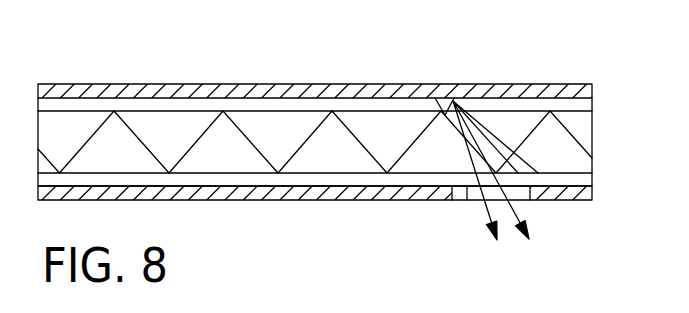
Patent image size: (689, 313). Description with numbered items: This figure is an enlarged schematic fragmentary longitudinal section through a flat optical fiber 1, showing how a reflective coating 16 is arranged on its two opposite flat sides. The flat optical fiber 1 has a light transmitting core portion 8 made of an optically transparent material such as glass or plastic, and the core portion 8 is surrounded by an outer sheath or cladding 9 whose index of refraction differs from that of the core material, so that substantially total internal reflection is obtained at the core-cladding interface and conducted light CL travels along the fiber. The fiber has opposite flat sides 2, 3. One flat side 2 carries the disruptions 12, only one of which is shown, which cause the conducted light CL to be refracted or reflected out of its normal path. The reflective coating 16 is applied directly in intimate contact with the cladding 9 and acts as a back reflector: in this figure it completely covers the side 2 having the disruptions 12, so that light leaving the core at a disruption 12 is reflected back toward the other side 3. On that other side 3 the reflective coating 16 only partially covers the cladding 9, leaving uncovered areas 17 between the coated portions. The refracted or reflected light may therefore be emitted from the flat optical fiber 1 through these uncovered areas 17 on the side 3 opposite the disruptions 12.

The flat optical fiber 1 is at (157, 97).
The flat side 2 is at (260, 98).
The flat side 3 is at (223, 187).
The light transmitting core portion 8 is at (388, 127).
The cladding 9 is at (308, 180).
The disruption 12 is at (443, 100).
The reflective coating 16 is at (307, 97).
The uncovered area 17 is at (467, 200).
The conducted light CL is at (93, 133).